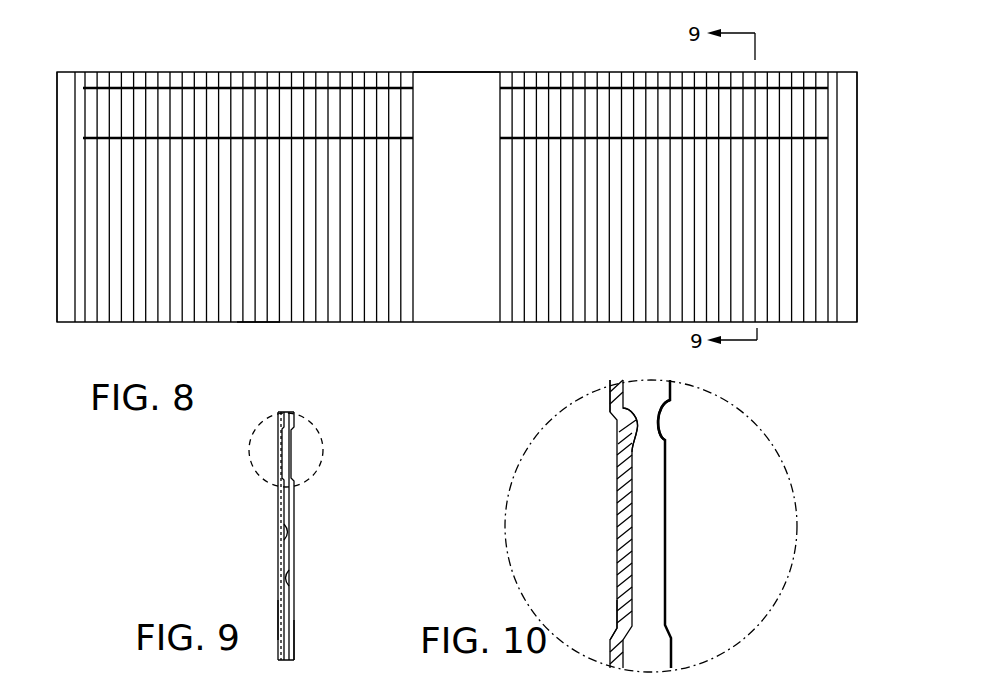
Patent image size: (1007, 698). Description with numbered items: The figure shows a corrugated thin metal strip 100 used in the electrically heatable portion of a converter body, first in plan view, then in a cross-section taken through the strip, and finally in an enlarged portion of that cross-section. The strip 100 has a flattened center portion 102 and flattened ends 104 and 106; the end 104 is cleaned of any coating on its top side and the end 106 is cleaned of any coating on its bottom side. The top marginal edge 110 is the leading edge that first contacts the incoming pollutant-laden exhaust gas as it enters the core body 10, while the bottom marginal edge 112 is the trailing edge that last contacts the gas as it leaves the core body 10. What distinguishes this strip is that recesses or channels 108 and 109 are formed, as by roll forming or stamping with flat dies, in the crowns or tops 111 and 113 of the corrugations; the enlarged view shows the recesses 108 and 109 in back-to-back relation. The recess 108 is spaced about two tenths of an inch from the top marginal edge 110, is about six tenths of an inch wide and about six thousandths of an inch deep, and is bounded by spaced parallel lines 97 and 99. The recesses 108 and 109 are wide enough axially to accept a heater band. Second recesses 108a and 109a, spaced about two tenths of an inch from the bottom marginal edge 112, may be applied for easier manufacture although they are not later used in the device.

In FIG. 8, the corrugated thin metal strip 100 is at (581, 68).
In FIG. 8, the flattened center portion 102 is at (450, 100).
In FIG. 8, the flattened end 104 is at (58, 282).
In FIG. 8, the flattened end 106 is at (845, 128).
In FIG. 8, the recess 108 is at (335, 110).
In FIG. 9, the recess 108 is at (284, 447).
In FIG. 10, the recess 108 is at (613, 532).
In FIG. 9, the second recess 108a is at (280, 620).
In FIG. 9, the recess 109 is at (288, 447).
In FIG. 10, the recess 109 is at (668, 552).
In FIG. 9, the second recess 109a is at (294, 633).
In FIG. 8, the top marginal edge 110 is at (322, 80).
In FIG. 9, the crown 111 is at (282, 524).
In FIG. 10, the crown 111 is at (622, 466).
In FIG. 8, the bottom marginal edge 112 is at (237, 322).
In FIG. 9, the crown 113 is at (290, 586).
In FIG. 10, the crown 113 is at (666, 443).
In FIG. 9, the core body 10 is at (302, 483).
In FIG. 10, the parallel line 97 is at (610, 428).
In FIG. 10, the parallel line 99 is at (612, 628).